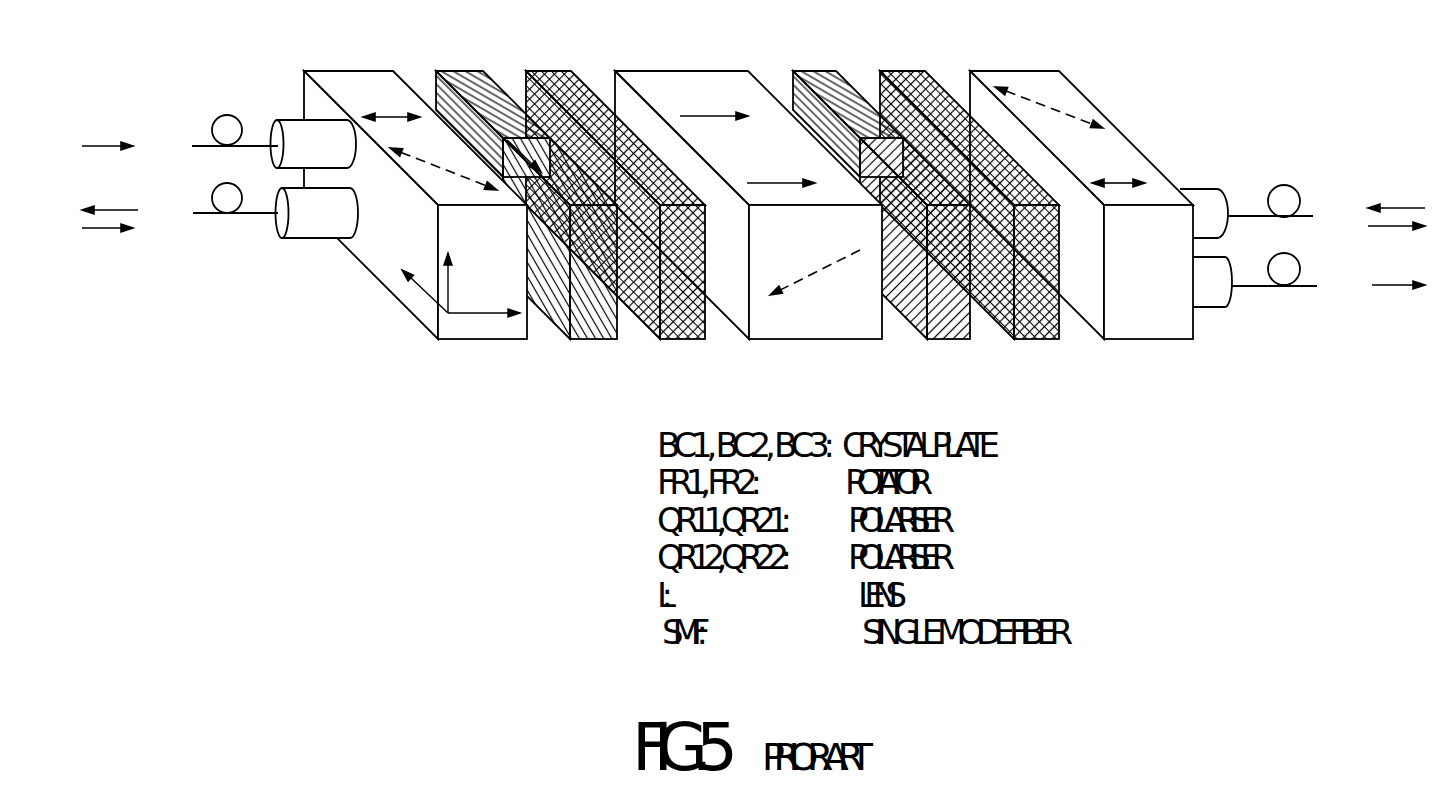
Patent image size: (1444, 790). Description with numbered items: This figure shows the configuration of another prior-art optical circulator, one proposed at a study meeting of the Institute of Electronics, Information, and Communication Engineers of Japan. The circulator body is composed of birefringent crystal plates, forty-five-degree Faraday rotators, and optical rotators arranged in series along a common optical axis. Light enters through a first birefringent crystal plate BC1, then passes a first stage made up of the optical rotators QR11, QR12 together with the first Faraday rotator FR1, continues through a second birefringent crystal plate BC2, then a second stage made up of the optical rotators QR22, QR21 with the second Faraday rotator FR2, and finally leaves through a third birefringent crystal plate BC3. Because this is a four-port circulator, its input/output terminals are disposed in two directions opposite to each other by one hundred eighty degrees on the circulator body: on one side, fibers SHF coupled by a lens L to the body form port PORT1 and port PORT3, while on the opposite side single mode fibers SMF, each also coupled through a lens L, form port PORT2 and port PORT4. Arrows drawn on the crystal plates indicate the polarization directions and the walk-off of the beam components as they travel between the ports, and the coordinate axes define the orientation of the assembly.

The birefringent crystal plate BC1 is at (415, 180).
The birefringent crystal plate BC2 is at (748, 180).
The birefringent crystal plate BC3 is at (1081, 180).
The 45-degree Faraday rotator FR1 is at (613, 180).
The 45-degree Faraday rotator FR2 is at (966, 180).
The optical rotator QR11 is at (486, 99).
The optical rotator QR12 is at (561, 266).
The optical rotator QR21 is at (918, 266).
The optical rotator QR22 is at (841, 99).
The lens L is at (752, 219).
The optical fiber SHF is at (235, 164).
The single mode fiber SMF is at (1272, 237).
The port 1 PORT1 is at (140, 131).
The port 2 PORT2 is at (1369, 198).
The port 3 PORT3 is at (140, 233).
The port 4 PORT4 is at (1369, 300).